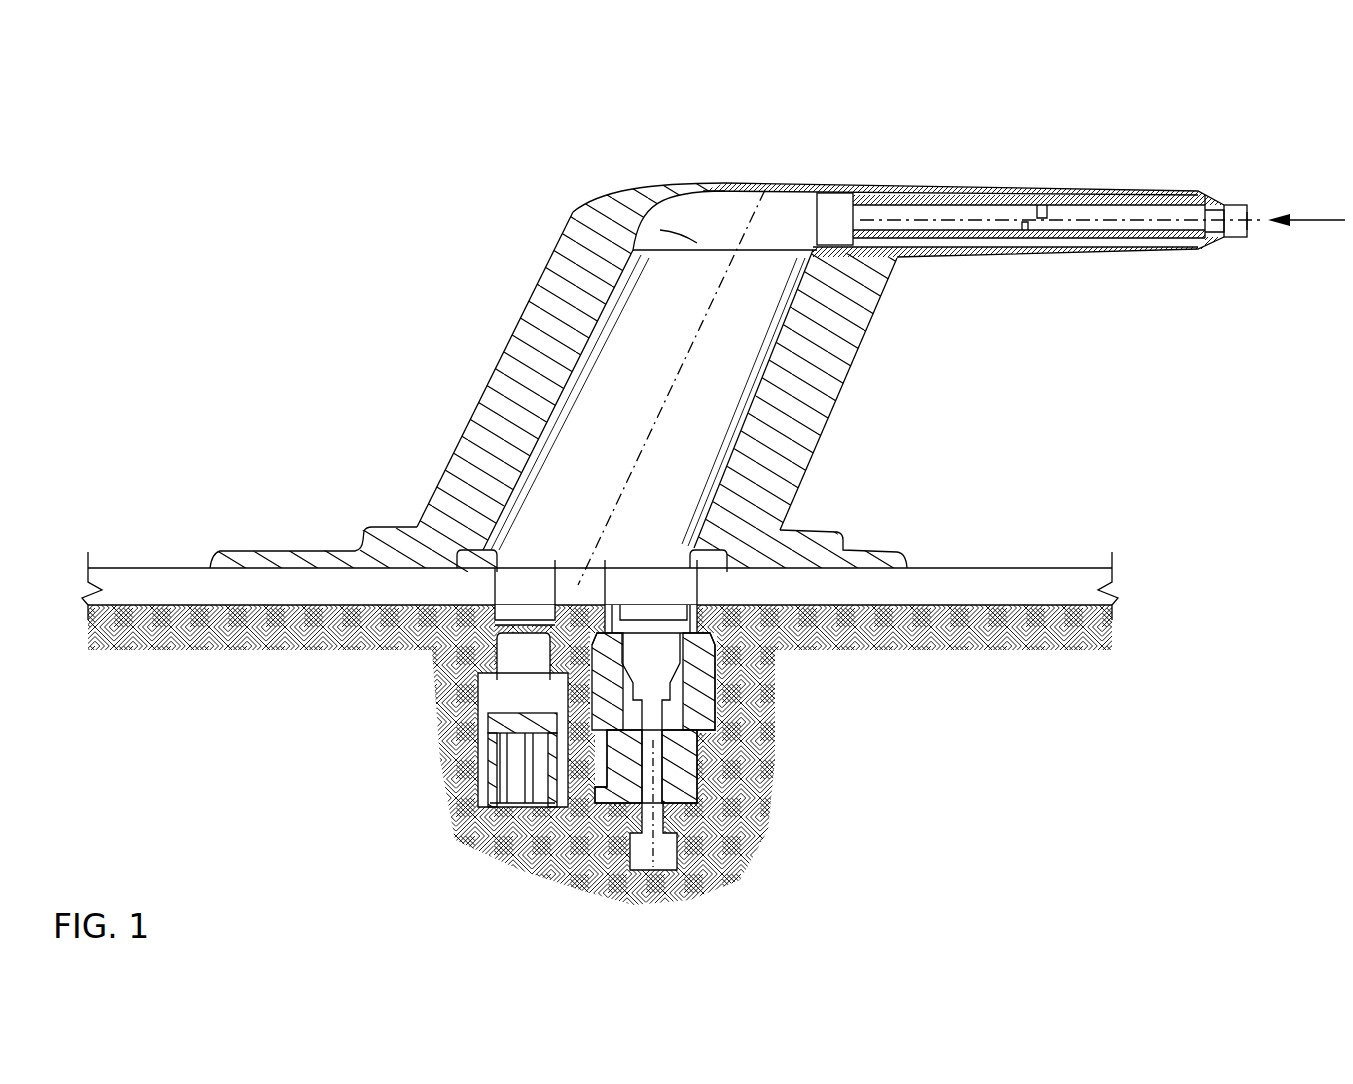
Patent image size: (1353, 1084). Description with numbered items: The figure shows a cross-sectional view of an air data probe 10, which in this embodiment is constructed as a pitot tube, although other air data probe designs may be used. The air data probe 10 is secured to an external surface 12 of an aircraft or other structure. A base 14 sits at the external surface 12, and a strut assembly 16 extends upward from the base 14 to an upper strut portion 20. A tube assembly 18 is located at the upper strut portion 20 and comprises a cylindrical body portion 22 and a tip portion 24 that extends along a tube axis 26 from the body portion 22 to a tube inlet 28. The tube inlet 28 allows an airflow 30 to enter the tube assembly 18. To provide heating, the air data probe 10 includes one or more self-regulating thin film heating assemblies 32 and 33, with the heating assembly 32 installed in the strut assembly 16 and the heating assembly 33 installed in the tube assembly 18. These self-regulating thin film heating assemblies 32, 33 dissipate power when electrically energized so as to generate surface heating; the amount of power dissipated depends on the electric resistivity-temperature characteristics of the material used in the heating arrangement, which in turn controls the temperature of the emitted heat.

The air data probe 10 is at (390, 94).
The external surface 12 is at (1024, 568).
The base 14 is at (347, 550).
The strut assembly 16 is at (498, 405).
The tube assembly 18 is at (800, 182).
The upper strut portion 20 is at (577, 213).
The cylindrical body portion 22 is at (903, 197).
The tip portion 24 is at (1215, 198).
The tube axis 26 is at (1107, 217).
The tube inlet 28 is at (1250, 237).
The airflow 30 is at (1305, 220).
The self-regulating thin film heating assembly 32 is at (590, 333).
The self-regulating thin film heating assembly 33 is at (1068, 258).